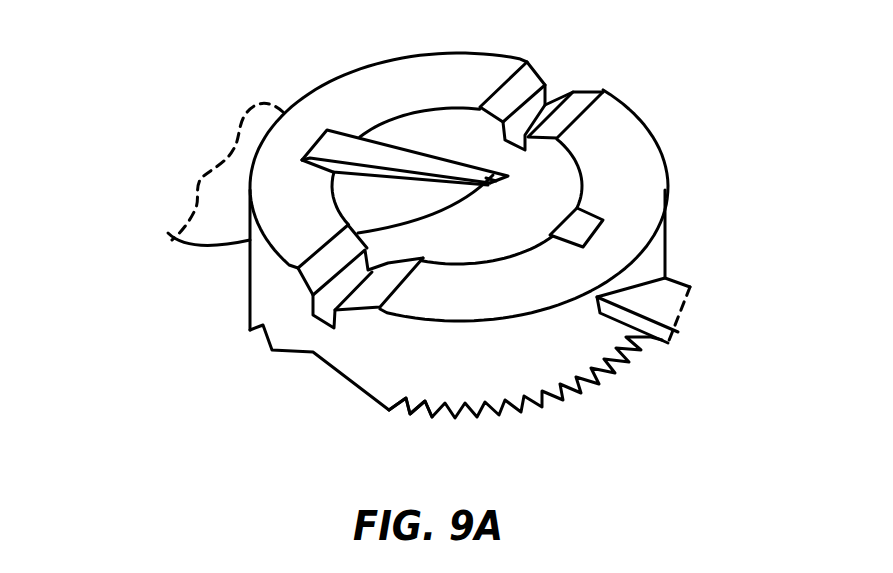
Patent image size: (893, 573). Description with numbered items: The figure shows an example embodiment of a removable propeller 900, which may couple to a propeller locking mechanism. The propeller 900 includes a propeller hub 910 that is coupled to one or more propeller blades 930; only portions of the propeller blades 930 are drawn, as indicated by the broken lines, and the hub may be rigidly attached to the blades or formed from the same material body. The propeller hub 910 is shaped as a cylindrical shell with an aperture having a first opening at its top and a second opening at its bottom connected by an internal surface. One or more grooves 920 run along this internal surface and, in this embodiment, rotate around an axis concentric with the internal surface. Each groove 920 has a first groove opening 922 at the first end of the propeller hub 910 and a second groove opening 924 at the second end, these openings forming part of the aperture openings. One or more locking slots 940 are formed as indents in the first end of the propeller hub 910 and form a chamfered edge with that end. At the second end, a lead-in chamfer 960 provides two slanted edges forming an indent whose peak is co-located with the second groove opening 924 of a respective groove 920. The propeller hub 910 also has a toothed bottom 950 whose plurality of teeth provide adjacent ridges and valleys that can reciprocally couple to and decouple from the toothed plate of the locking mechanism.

The propeller 900 is at (675, 119).
The propeller hub 910 is at (555, 372).
The groove 920 is at (420, 160).
The first groove opening 922 is at (327, 148).
The second groove opening 924 is at (492, 178).
The propeller blade 930 is at (213, 205).
The locking slot 940 is at (318, 318).
The toothed bottom 950 is at (413, 405).
The lead-in chamfer 960 is at (310, 355).